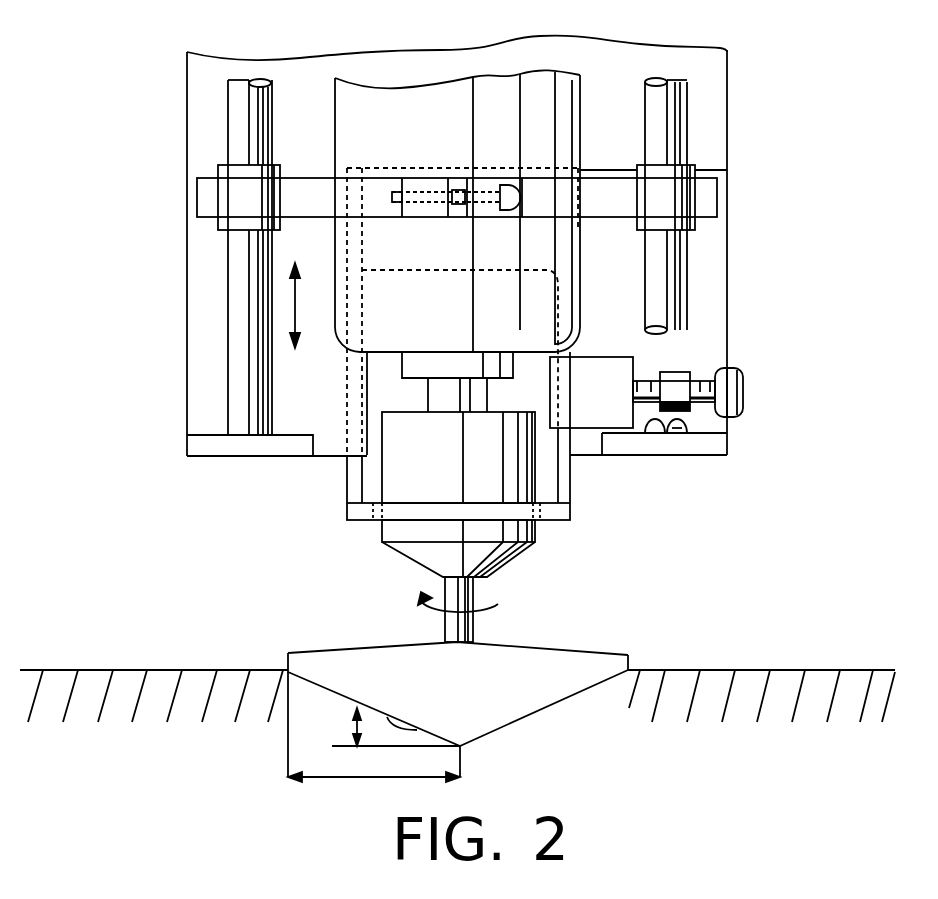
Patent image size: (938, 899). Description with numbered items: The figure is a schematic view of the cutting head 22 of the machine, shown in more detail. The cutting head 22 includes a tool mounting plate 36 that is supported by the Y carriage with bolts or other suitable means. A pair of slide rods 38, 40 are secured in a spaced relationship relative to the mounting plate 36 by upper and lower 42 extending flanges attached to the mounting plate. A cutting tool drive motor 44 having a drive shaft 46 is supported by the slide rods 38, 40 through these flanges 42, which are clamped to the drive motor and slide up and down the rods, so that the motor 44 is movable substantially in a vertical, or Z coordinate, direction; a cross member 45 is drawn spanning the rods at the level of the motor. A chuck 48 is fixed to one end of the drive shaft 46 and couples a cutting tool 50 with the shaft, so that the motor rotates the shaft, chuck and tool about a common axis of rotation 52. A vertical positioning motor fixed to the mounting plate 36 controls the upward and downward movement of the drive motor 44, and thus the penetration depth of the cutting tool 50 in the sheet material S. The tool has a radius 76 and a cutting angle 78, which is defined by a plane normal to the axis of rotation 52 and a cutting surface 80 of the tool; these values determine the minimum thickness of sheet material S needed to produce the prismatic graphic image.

The cutting head 22 is at (793, 240).
The tool mounting plate 36 is at (727, 108).
The slide rod 38 is at (228, 100).
The slide rod 40 is at (645, 117).
The lower extending flange 42 is at (295, 437).
The cutting tool drive motor 44 is at (396, 112).
The cross bar 45 is at (308, 178).
The drive shaft 46 is at (493, 387).
The chuck 48 is at (435, 435).
The cutting tool 50 is at (527, 663).
The axis of rotation 52 is at (464, 763).
The radius 76 is at (372, 778).
The cutting angle 78 is at (350, 718).
The cutting surface 80 is at (415, 727).
The sheet material S is at (735, 670).